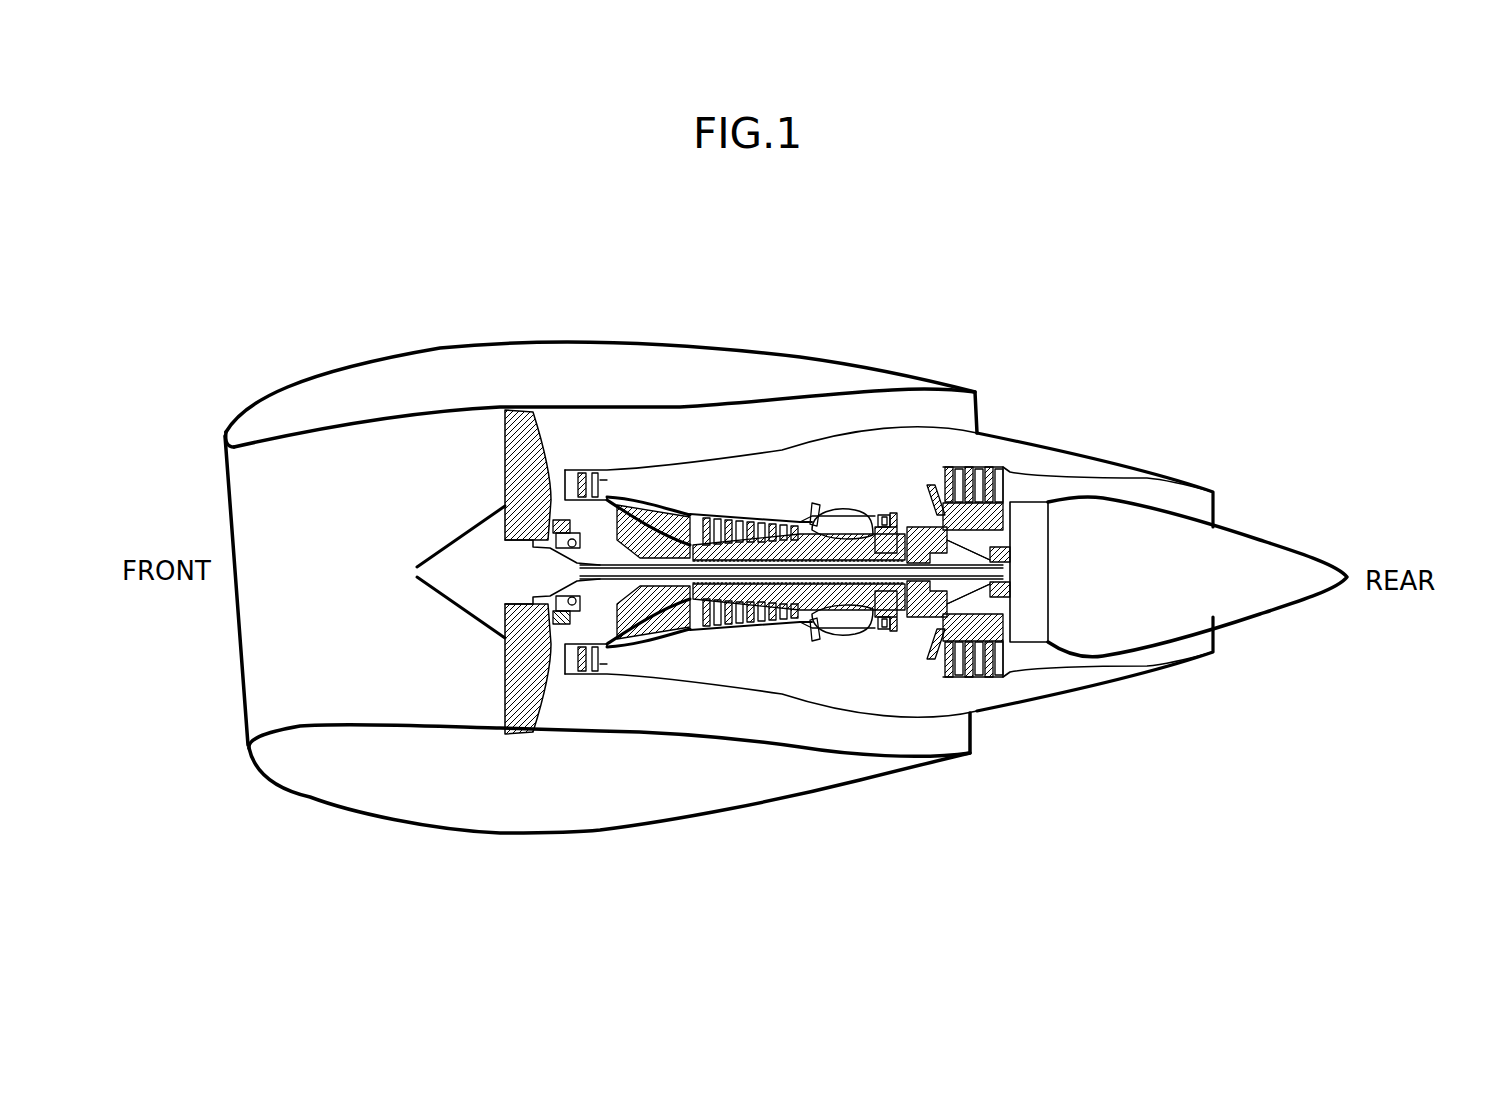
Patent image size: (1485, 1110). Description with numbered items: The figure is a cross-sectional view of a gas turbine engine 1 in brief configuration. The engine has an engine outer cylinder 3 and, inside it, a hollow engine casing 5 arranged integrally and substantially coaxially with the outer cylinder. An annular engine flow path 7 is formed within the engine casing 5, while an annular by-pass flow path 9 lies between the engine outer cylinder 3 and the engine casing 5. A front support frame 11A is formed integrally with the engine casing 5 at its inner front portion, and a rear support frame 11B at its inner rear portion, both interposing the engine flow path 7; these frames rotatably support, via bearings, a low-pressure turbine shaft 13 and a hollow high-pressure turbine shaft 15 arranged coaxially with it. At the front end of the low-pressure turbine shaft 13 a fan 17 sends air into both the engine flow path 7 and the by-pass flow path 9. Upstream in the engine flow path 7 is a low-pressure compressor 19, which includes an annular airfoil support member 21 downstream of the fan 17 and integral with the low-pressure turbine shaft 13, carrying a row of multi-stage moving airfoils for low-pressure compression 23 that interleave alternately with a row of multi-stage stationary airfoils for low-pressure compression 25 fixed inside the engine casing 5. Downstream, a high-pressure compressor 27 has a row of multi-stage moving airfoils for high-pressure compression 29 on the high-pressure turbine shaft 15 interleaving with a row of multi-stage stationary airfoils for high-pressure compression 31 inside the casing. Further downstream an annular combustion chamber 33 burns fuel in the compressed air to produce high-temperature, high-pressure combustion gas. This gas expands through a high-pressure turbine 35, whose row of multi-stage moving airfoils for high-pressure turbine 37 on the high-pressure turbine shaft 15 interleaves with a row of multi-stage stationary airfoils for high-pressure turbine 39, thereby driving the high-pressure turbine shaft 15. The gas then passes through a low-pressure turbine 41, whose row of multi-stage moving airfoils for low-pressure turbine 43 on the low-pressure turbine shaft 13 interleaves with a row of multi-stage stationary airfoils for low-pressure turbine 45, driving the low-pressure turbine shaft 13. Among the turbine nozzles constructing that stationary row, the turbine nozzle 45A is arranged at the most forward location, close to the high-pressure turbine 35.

The gas turbine engine 1 is at (786, 534).
The engine outer cylinder 3 is at (447, 348).
The engine casing 5 is at (781, 446).
The engine flow path 7 is at (643, 520).
The by-pass flow path 9 is at (683, 430).
The front support frame 11A is at (633, 625).
The rear support frame 11B is at (933, 622).
The low-pressure turbine shaft 13 is at (775, 610).
The high-pressure turbine shaft 15 is at (780, 545).
The fan 17 is at (505, 455).
The low-pressure compressor 19 is at (610, 467).
The airfoil support member 21 is at (562, 500).
The row of multi-stage moving airfoils for low-pressure compression 23 is at (584, 473).
The row of multi-stage stationary airfoils for low-pressure compression 25 is at (572, 470).
The high-pressure compressor 27 is at (735, 512).
The row of multi-stage moving airfoils for high-pressure compression 29 is at (728, 622).
The row of multi-stage stationary airfoils for high-pressure compression 31 is at (724, 517).
The combustion chamber 33 is at (850, 514).
The high-pressure turbine 35 is at (887, 505).
The row of multi-stage moving airfoils for high-pressure turbine 37 is at (880, 628).
The row of multi-stage stationary airfoils for high-pressure turbine 39 is at (889, 630).
The low-pressure turbine 41 is at (990, 458).
The row of multi-stage moving airfoils for low-pressure turbine 43 is at (968, 478).
The row of multi-stage stationary airfoils for low-pressure turbine 45 is at (990, 680).
The turbine nozzle 45A is at (932, 490).